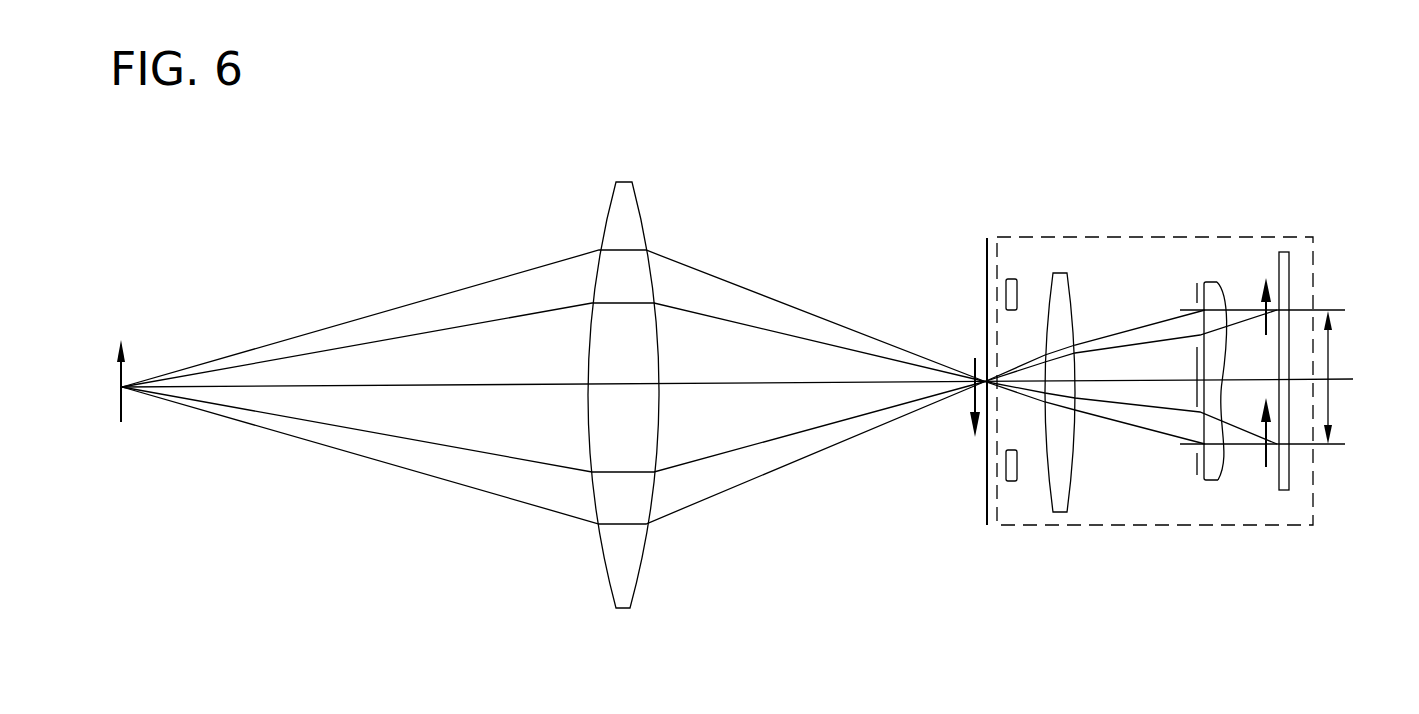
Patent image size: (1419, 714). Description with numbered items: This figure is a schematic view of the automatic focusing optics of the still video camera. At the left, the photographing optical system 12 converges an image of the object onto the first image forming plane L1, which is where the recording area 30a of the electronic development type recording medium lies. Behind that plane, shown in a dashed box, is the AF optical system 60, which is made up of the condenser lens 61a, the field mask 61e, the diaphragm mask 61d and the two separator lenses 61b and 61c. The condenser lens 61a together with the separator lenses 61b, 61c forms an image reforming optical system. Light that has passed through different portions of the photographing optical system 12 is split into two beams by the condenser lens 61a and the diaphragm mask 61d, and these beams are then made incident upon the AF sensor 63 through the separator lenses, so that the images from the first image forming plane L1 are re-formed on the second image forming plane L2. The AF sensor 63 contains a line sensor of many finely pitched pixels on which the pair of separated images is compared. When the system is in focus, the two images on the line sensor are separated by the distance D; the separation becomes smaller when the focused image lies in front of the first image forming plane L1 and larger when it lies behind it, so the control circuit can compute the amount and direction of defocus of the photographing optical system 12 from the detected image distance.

The photographing optical system 12 is at (632, 190).
The recording area 30a is at (982, 241).
The AF optical system 60 is at (1143, 228).
The condenser lens 61a is at (1064, 288).
The separator lens 61b is at (1248, 381).
The separator lens 61c is at (1222, 480).
The diaphragm mask 61d is at (1193, 463).
The field mask 61e is at (1021, 480).
The AF sensor 63 is at (1304, 499).
The image distance in a focused state D is at (1328, 340).
The image forming plane L1 is at (988, 465).
The second image forming plane L2 is at (1302, 422).